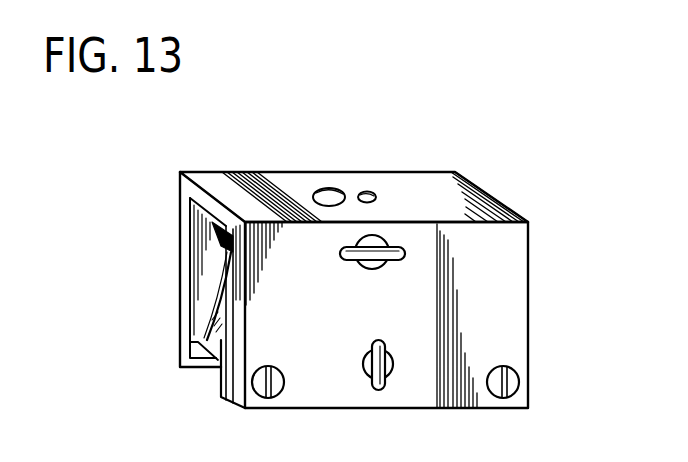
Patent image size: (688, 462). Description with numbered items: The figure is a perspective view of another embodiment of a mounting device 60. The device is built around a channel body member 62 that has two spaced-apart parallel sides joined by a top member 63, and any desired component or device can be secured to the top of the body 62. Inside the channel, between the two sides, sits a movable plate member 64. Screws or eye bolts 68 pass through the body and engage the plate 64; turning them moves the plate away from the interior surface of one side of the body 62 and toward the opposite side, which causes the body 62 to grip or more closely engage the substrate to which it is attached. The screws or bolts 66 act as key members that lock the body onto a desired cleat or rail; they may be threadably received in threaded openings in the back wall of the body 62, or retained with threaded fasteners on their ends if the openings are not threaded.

The mounting device 60 is at (562, 231).
The channel body member 62 is at (517, 316).
The top member 63 is at (290, 182).
The movable plate member 64 is at (222, 390).
The screws or bolts 66 is at (487, 378).
The screws or eye bolts 68 is at (370, 350).